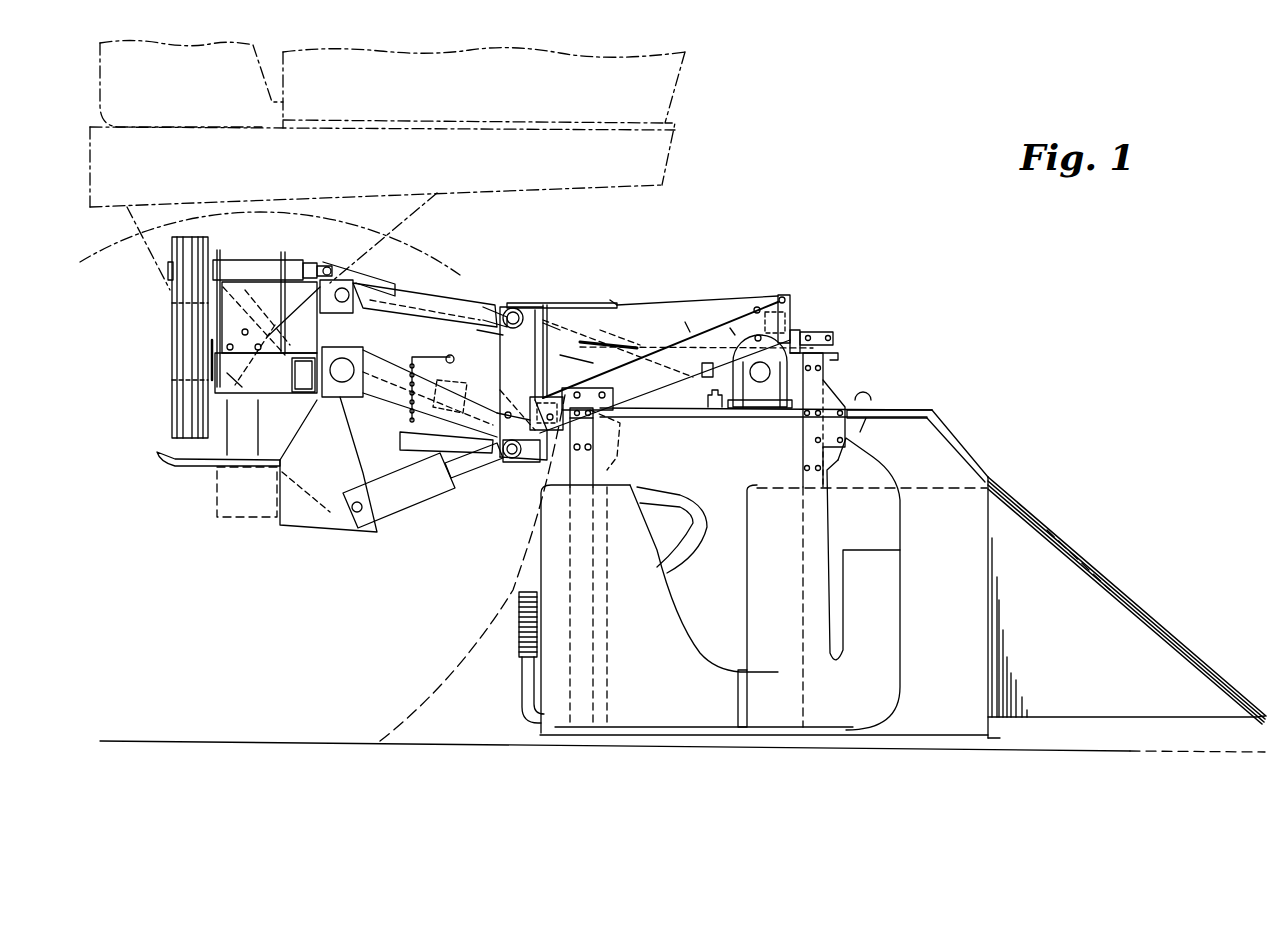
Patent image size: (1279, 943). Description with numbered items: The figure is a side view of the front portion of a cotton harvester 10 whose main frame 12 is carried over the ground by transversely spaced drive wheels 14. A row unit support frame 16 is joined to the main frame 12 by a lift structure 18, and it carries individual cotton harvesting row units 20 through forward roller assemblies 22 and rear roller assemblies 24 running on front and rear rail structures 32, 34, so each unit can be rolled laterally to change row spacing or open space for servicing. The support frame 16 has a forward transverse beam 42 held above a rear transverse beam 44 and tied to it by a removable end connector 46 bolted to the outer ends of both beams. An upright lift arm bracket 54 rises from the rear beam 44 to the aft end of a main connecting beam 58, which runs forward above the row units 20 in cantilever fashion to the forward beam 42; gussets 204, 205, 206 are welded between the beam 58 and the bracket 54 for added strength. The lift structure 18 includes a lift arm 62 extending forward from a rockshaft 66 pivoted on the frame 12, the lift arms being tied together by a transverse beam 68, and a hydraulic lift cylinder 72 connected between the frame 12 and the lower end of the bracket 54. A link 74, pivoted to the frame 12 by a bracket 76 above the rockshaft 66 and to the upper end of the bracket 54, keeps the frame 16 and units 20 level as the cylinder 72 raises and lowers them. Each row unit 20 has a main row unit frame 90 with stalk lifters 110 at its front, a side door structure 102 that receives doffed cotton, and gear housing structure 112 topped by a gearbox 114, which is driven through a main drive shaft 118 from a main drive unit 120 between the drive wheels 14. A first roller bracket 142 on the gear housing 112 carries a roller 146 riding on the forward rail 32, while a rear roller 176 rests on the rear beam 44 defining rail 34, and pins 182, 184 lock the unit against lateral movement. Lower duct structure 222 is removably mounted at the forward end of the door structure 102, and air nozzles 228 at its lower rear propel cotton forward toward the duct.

The cotton harvester 10 is at (705, 166).
The main frame 12 is at (215, 502).
The drive wheels 14 is at (418, 728).
The row unit support frame 16 is at (764, 238).
The lift structure 18 is at (454, 512).
The cotton harvesting row units 20 is at (976, 395).
The forward roller assemblies 22 is at (828, 318).
The rear roller assemblies 24 is at (598, 360).
The front rail structure 32 is at (773, 382).
The rear rail structure 34 is at (535, 390).
The forward transverse beam 42 is at (775, 296).
The rear transverse beam 44 is at (517, 462).
The end connector 46 is at (730, 328).
The upright lift arm bracket 54 is at (478, 344).
The main connecting beam 58 is at (685, 322).
The lift arm 62 is at (383, 393).
The rockshaft 66 is at (350, 368).
The transverse beam 68 is at (487, 382).
The hydraulic lift cylinder 72 is at (393, 507).
The link 74 is at (393, 290).
The bracket 76 is at (330, 312).
The main row unit frame 90 is at (988, 734).
The door structure 102 is at (920, 637).
The stalk lifters 110 is at (1127, 592).
The gear housing structure 112 is at (952, 448).
The gearbox 114 is at (750, 395).
The main drive shaft 118 is at (450, 290).
The main drive unit 120 is at (309, 240).
The first roller bracket 142 is at (838, 390).
The roller 146 is at (829, 312).
The roller 176 is at (545, 397).
The pin 182 is at (842, 345).
The pin 184 is at (617, 428).
The gusset 204 is at (610, 302).
The gusset 205 is at (532, 313).
The gusset 206 is at (543, 323).
The lower duct structure 222 is at (900, 507).
The air nozzles 228 is at (520, 707).